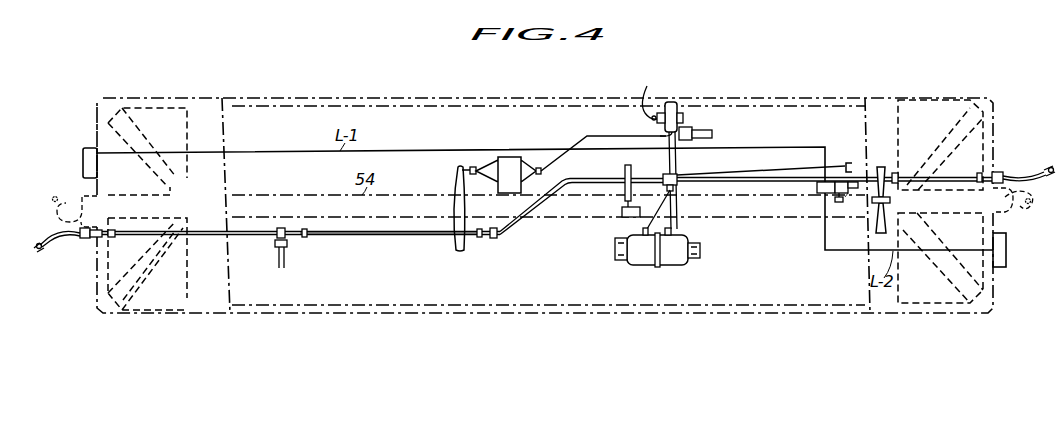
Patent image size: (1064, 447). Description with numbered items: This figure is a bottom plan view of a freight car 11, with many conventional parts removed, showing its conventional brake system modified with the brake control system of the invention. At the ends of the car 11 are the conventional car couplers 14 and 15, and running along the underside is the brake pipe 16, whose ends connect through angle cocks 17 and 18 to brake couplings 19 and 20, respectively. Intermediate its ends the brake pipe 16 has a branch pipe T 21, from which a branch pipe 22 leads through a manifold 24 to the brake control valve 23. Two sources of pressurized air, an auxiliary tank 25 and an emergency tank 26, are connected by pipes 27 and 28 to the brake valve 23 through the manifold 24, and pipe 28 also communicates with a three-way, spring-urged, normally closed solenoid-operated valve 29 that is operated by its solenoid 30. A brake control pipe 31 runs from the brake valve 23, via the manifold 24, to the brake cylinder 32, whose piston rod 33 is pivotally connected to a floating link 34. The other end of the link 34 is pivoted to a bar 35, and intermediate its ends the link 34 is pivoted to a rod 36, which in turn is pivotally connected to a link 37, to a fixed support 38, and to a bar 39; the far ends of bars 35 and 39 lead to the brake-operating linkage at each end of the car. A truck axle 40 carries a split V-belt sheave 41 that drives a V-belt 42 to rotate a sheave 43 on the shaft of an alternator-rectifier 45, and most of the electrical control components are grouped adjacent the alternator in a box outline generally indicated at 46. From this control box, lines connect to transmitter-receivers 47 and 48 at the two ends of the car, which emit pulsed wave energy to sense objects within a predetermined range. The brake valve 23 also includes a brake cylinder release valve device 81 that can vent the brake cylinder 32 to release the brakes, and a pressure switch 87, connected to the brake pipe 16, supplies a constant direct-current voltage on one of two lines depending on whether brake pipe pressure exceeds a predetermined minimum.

The freight car 11 is at (370, 98).
The car coupler 14 is at (70, 197).
The car coupler 15 is at (1024, 212).
The brake pipe 16 is at (400, 236).
The angle cock 17 is at (85, 240).
The angle cock 18 is at (1003, 172).
The brake coupling 19 is at (66, 242).
The brake coupling 20 is at (1030, 172).
The branch pipe T 21 is at (702, 172).
The branch pipe 22 is at (678, 175).
The brake control valve 23 is at (683, 98).
The manifold 24 is at (642, 134).
The auxiliary tank 25 is at (641, 266).
The emergency tank 26 is at (676, 266).
The pipe 27 is at (650, 222).
The pipe 28 is at (676, 205).
The three-way solenoid-operated valve 29 is at (692, 132).
The solenoid 30 is at (712, 134).
The brake control pipe 31 is at (572, 146).
The brake cylinder 32 is at (508, 157).
The piston rod 33 is at (472, 166).
The floating link 34 is at (455, 183).
The bar 35 is at (362, 236).
The rod 36 is at (548, 218).
The link 37 is at (624, 176).
The fixed support 38 is at (622, 211).
The bar 39 is at (776, 177).
The truck axle 40 is at (875, 222).
The split V-belt sheave 41 is at (890, 200).
The V-belt 42 is at (862, 204).
The V-belt sheave 43 is at (834, 200).
The alternator-rectifier 45 is at (842, 178).
The control components box 46 is at (822, 169).
The transmitter-receiver 47 is at (83, 156).
The transmitter-receiver 48 is at (1006, 262).
The brake cylinder release valve device 81 is at (646, 90).
The pressure switch 87 is at (288, 248).